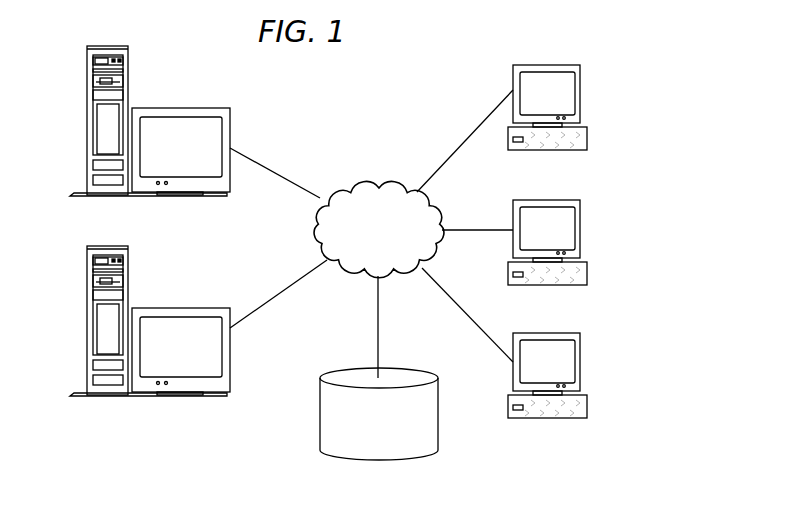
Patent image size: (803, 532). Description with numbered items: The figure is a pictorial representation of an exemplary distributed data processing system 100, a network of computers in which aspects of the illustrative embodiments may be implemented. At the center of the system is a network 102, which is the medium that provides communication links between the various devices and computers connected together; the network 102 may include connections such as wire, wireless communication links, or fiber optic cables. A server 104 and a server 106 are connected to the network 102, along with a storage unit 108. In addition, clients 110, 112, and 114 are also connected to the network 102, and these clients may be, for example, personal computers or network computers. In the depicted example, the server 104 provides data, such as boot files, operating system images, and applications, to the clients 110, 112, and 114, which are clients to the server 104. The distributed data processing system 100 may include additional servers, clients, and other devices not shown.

The distributed data processing system 100 is at (432, 70).
The network 102 is at (373, 180).
The server 104 is at (87, 120).
The server 106 is at (87, 323).
The storage unit 108 is at (388, 459).
The client 110 is at (583, 88).
The client 112 is at (583, 223).
The client 114 is at (583, 362).